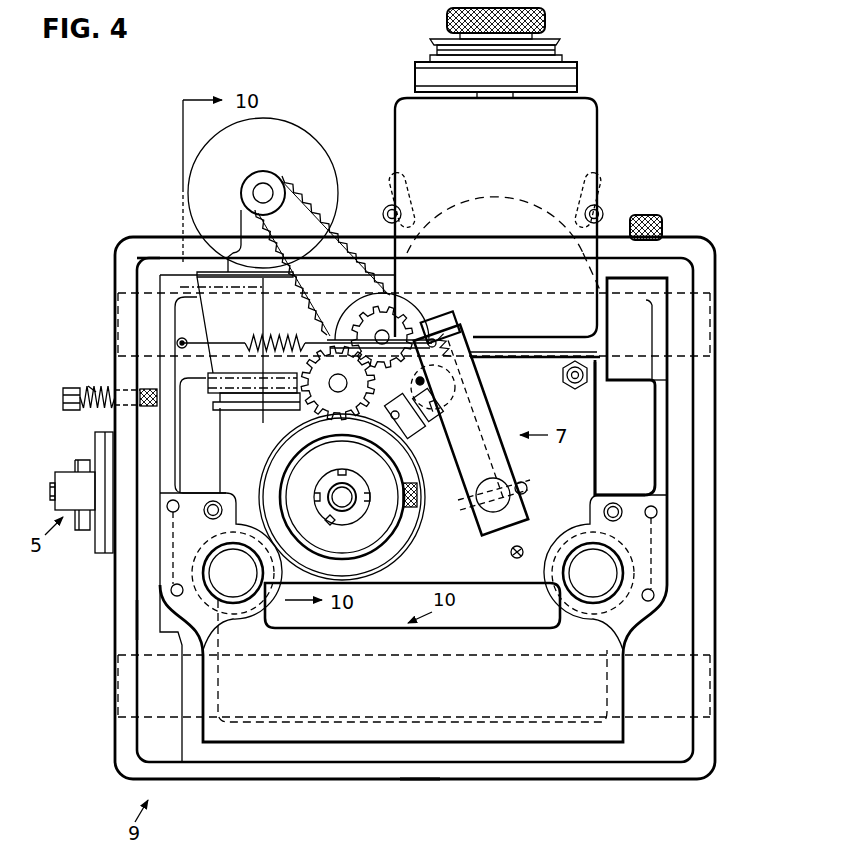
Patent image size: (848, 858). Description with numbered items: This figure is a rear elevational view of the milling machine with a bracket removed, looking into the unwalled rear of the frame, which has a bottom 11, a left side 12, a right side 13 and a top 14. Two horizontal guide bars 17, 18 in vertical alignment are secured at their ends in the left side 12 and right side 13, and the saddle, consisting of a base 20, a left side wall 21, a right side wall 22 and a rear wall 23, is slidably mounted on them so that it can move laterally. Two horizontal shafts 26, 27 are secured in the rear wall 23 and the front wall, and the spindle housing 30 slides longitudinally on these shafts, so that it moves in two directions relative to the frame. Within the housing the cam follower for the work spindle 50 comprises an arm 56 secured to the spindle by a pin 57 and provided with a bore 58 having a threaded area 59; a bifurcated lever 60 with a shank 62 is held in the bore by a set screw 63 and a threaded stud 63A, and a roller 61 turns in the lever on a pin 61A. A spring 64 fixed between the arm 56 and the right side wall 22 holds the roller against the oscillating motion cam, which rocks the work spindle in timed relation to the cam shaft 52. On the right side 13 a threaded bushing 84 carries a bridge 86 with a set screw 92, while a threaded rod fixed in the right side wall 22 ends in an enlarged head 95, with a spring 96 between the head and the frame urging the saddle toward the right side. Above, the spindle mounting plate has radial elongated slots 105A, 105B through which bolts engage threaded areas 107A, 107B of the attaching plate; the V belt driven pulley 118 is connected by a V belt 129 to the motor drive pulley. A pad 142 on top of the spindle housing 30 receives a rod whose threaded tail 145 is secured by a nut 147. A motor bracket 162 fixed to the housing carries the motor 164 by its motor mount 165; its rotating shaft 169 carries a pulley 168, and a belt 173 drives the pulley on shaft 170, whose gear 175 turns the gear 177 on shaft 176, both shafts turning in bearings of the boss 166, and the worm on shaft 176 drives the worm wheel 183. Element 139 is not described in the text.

The bottom 11 is at (418, 779).
The left side 12 is at (716, 573).
The right side 13 is at (118, 640).
The top 14 is at (170, 247).
The horizontal guide bar 17 is at (118, 693).
The horizontal guide bar 18 is at (118, 328).
The base 20 is at (310, 742).
The left side wall 21 is at (665, 407).
The right side wall 22 is at (160, 320).
The rear wall 23 is at (516, 649).
The horizontal shaft 26 is at (248, 582).
The horizontal shaft 27 is at (608, 582).
The spindle housing 30 is at (465, 555).
The work spindle 50 is at (502, 488).
The cam shaft 52 is at (346, 507).
The arm 56 is at (482, 449).
The pin 57 is at (528, 489).
The bore 58 is at (428, 383).
The threaded area 59 is at (474, 353).
The bifurcated lever 60 is at (428, 448).
The roller 61 is at (405, 430).
The pin 61A is at (390, 418).
The shank 62 is at (436, 409).
The set screw 63 is at (414, 421).
The threaded stud 63A is at (468, 320).
The spring 64 is at (277, 337).
The bushing 84 is at (97, 440).
The bridge 86 is at (70, 472).
The set screw 92 is at (52, 490).
The enlarged head 95 is at (75, 404).
The spring 96 is at (96, 386).
The radial elongated slot 105A is at (385, 214).
The radial elongated slot 105B is at (606, 226).
The threaded area 107A is at (398, 205).
The threaded area 107B is at (607, 212).
The V belt driven pulley 118 is at (556, 47).
The V belt 129 is at (580, 76).
The button 139 is at (665, 230).
The pad 142 is at (566, 366).
The threaded tail 145 is at (582, 390).
The nut 147 is at (588, 392).
The motor bracket 162 is at (232, 318).
The motor 164 is at (302, 148).
The motor mount 165 is at (268, 266).
The boss 166 is at (358, 283).
The pulley 168 is at (277, 186).
The rotating shaft 169 is at (259, 190).
The shaft 170 is at (390, 333).
The belt 173 is at (352, 287).
The gear 175 is at (396, 314).
The shaft 176 is at (338, 383).
The gear 177 is at (334, 395).
The worm wheel 183 is at (192, 405).